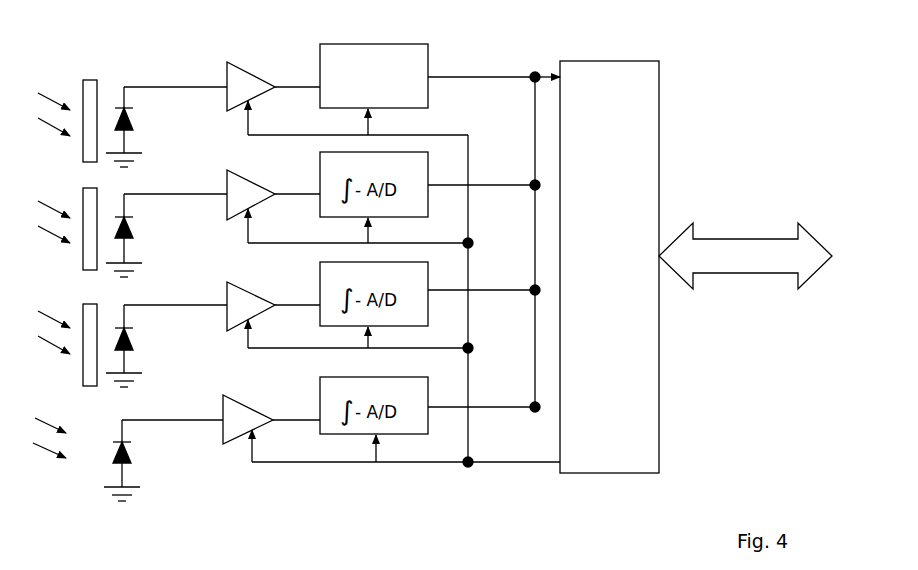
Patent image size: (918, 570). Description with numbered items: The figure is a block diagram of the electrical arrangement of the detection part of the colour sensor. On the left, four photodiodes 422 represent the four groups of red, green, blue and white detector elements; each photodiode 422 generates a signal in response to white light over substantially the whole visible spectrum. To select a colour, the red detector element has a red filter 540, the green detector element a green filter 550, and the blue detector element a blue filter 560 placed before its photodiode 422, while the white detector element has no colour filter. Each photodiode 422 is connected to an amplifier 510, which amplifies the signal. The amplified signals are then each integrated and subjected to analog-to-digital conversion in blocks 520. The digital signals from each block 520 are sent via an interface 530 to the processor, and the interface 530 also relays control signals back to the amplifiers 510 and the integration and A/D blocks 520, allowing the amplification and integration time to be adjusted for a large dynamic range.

The red filter 540 is at (97, 80).
The green filter 550 is at (92, 187).
The blue filter 560 is at (97, 303).
The amplifier 510 is at (225, 73).
The integration and A/D functional block 520 is at (377, 44).
The interface 530 is at (658, 97).
The photodiode 422 is at (133, 455).